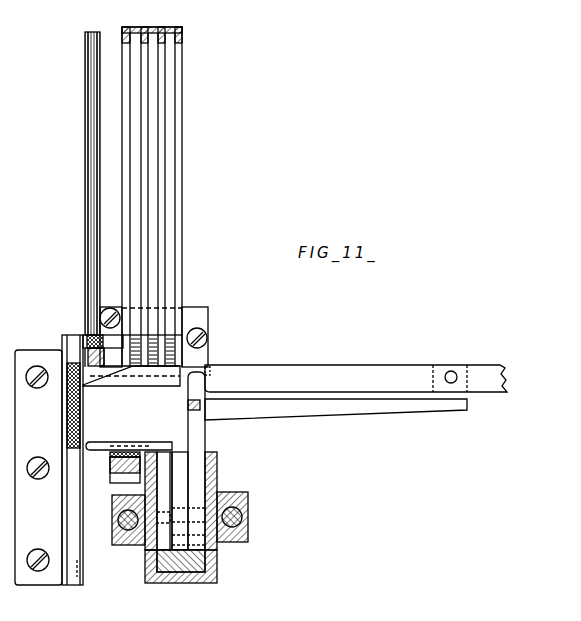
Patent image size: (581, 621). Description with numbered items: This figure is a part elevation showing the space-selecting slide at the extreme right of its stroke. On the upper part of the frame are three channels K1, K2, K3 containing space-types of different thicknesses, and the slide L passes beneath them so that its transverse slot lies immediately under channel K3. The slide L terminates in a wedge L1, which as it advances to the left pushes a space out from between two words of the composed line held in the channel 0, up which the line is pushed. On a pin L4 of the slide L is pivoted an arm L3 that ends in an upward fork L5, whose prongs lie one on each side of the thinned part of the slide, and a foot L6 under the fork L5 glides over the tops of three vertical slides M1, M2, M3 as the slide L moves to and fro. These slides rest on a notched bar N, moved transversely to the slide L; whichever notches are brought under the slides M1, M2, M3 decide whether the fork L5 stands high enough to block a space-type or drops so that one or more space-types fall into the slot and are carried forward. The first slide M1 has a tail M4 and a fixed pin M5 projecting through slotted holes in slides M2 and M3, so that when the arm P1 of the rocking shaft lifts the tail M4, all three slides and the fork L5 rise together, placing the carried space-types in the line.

The channel K1 is at (134, 173).
The channel K2 is at (152, 152).
The channel K3 is at (172, 220).
The slide L is at (356, 378).
The wedge L1 is at (130, 384).
The arm L3 is at (294, 413).
The pin L4 is at (453, 370).
The fork L5 is at (166, 378).
The foot L6 is at (186, 424).
The vertical slide M1 is at (162, 470).
The vertical slide M2 is at (212, 476).
The vertical slide M3 is at (193, 487).
The tail M4 is at (129, 434).
The pin M5 is at (146, 553).
The notched bar N is at (184, 565).
The arm P1 is at (120, 477).
The channel 0 is at (78, 583).